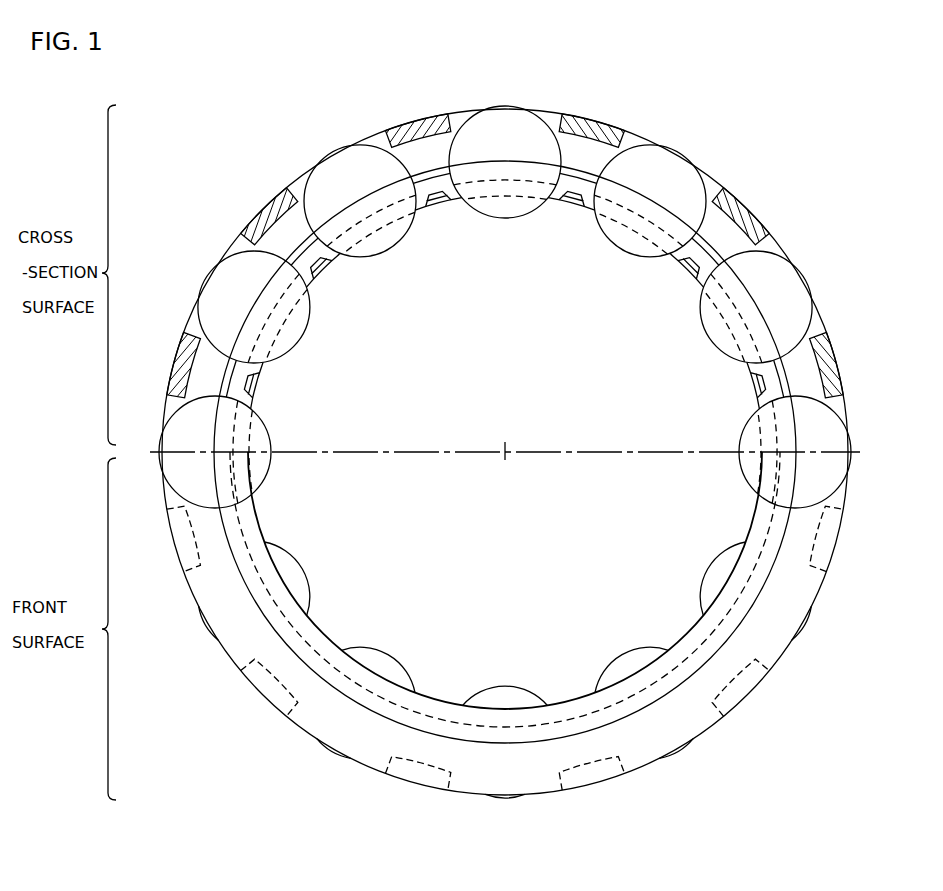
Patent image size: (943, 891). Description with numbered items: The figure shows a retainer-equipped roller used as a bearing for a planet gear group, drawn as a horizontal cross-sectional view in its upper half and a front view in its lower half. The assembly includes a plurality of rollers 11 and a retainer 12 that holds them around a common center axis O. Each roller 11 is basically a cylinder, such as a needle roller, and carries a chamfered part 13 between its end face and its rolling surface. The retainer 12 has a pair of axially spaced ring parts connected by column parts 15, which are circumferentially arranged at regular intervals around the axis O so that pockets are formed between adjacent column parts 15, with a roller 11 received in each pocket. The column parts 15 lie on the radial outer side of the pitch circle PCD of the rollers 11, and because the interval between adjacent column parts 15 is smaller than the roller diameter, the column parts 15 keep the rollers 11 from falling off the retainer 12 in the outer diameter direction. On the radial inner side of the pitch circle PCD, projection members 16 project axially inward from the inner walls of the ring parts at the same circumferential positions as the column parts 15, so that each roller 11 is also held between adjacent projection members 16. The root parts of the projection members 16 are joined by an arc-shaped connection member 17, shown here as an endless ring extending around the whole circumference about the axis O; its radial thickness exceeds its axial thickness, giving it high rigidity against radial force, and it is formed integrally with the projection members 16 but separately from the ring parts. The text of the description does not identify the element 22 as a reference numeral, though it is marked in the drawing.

The roller 11 is at (160, 441).
The retainer 12 is at (186, 326).
The chamfered part 13 is at (382, 664).
The column part 15 is at (596, 126).
The projection member 16 is at (438, 203).
The connection member 17 is at (563, 196).
The pocket opening 22 is at (468, 124).
The center axis O is at (505, 453).
The pitch circle PCD is at (533, 165).